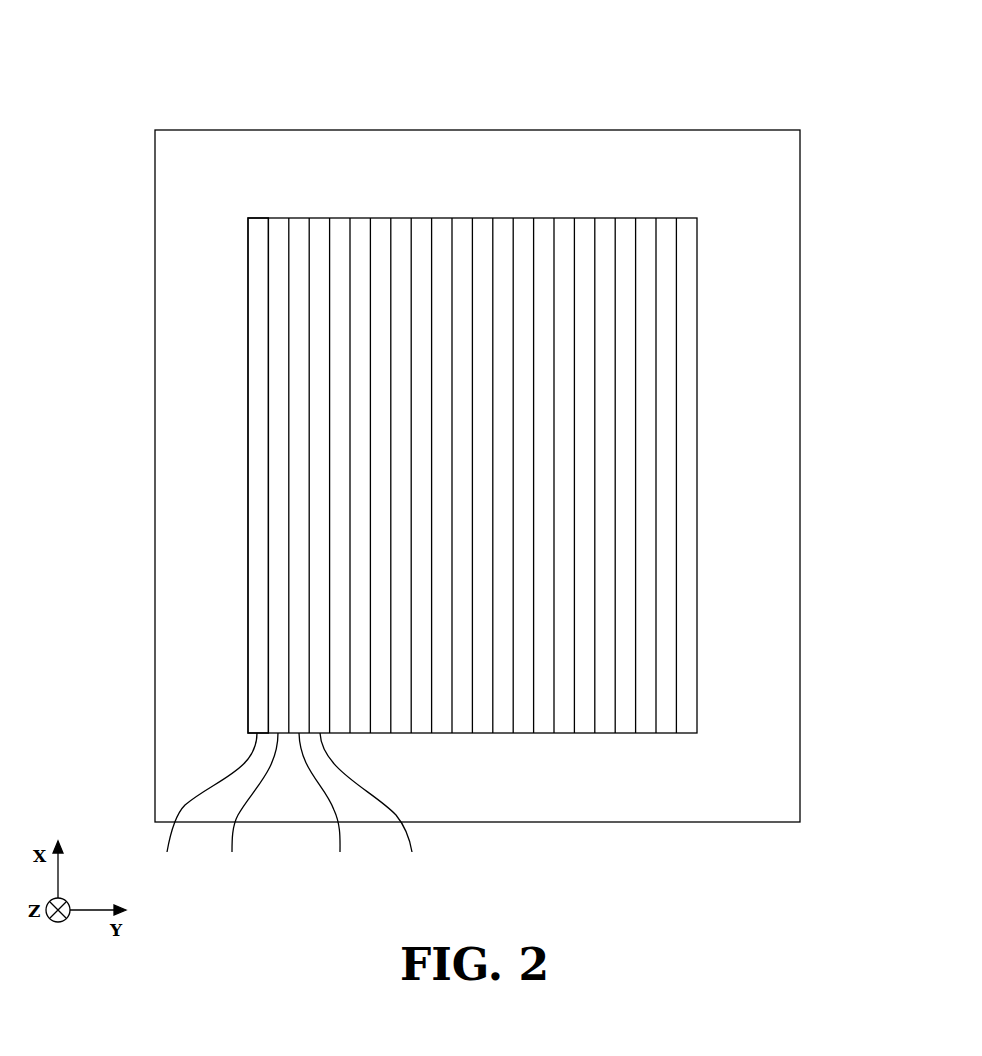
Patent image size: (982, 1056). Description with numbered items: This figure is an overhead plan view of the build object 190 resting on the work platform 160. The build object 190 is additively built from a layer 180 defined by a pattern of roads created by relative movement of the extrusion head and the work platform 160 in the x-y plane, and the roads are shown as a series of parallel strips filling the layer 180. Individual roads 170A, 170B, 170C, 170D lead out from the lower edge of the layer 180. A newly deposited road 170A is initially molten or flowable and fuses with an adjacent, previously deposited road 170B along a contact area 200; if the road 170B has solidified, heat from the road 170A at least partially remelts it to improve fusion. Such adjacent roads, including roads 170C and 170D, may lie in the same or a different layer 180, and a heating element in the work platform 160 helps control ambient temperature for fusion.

The work platform 160 is at (350, 130).
The build object 190 is at (708, 214).
The layer 180 is at (247, 627).
The contact area 200 is at (271, 240).
The newly deposited road 170A is at (196, 806).
The previously deposited road 170B is at (242, 806).
The road 170C is at (333, 806).
The road 170D is at (380, 806).